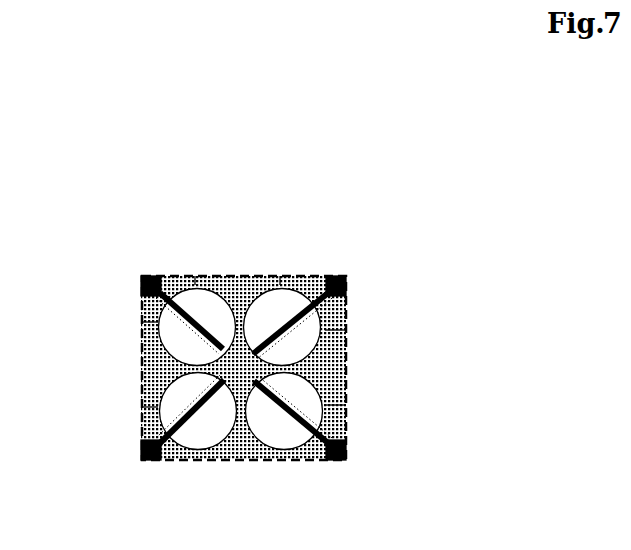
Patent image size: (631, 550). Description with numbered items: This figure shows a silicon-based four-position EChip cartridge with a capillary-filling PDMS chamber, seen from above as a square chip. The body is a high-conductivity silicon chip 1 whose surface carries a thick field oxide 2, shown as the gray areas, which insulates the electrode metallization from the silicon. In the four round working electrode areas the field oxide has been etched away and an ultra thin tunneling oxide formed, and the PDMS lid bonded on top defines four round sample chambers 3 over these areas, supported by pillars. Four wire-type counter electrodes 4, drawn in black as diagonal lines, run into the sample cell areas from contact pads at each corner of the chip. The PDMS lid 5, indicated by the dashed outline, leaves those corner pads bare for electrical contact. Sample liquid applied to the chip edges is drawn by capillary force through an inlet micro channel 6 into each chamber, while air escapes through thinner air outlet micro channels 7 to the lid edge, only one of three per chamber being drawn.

The silicon chip 1 is at (353, 317).
The thick field oxide 2 is at (347, 437).
The sample chambers 3 is at (180, 340).
The counter electrodes 4 is at (343, 467).
The PDMS lid 5 is at (306, 273).
The inlet micro channels 6 is at (353, 330).
The air outlet micro channels 7 is at (195, 268).